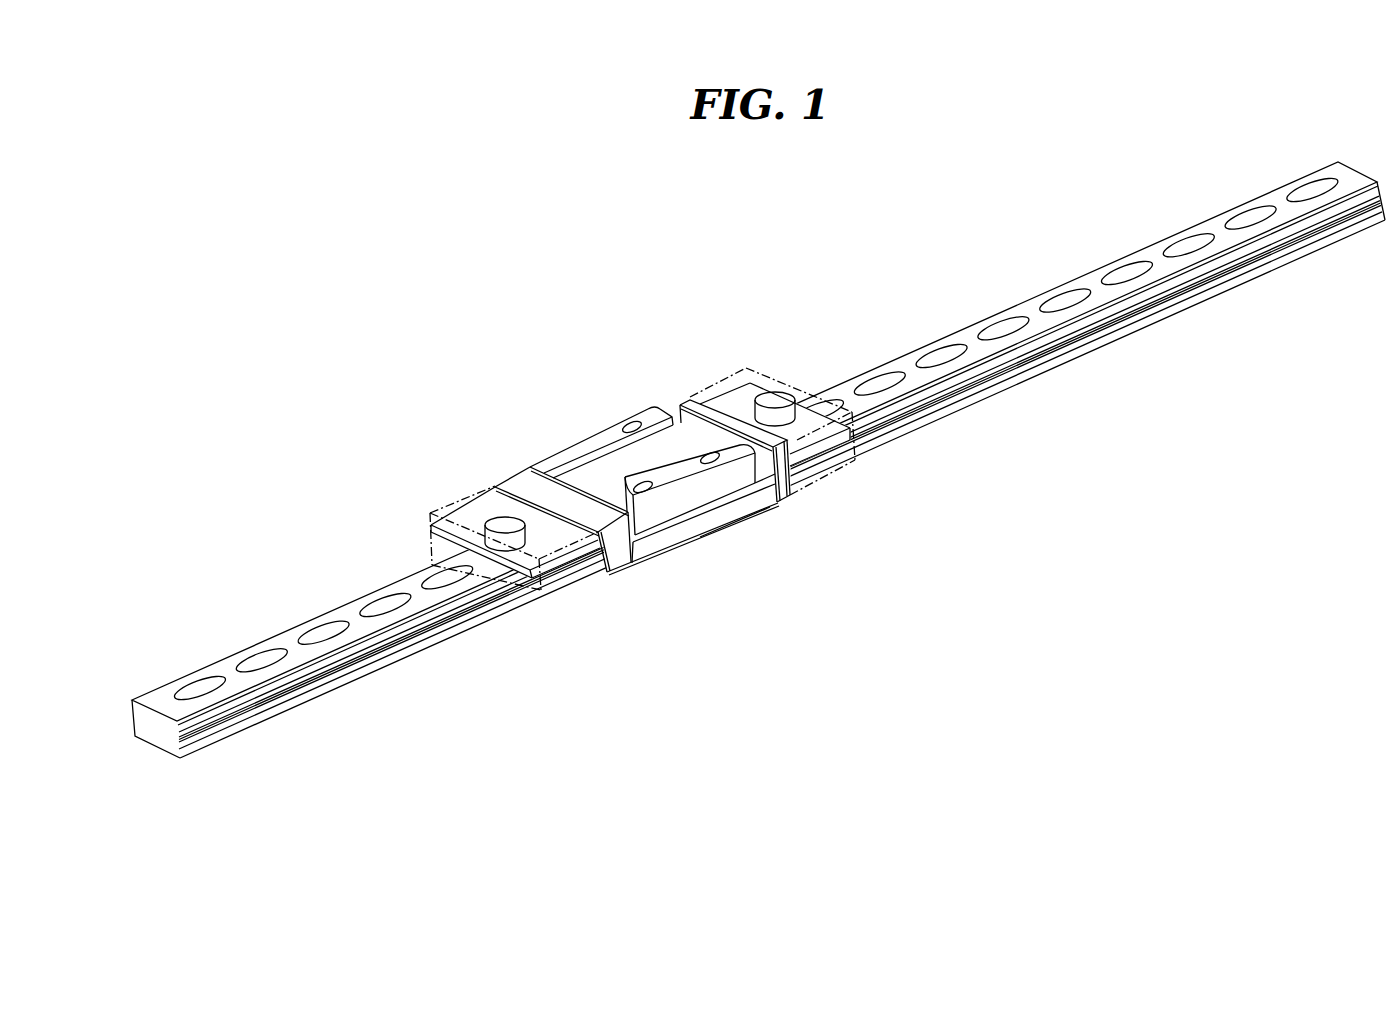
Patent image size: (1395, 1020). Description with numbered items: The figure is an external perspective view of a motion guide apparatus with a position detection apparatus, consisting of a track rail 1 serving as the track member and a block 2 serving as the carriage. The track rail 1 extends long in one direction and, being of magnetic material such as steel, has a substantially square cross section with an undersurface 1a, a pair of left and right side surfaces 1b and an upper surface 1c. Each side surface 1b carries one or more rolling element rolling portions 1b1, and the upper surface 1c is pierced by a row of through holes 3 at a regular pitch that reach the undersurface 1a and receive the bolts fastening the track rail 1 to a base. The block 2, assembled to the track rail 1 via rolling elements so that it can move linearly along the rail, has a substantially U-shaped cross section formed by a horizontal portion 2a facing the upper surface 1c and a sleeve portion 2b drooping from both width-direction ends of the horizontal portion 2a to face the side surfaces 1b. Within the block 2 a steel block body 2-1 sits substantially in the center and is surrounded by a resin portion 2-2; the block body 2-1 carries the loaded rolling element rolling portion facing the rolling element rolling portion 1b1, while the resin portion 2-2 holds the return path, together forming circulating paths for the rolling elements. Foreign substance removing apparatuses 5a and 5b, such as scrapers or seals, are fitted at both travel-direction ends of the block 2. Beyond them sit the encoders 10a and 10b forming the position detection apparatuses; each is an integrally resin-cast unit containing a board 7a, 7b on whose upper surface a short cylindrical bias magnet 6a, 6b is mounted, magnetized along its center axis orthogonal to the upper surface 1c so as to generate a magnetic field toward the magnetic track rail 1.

The track rail 1 is at (726, 490).
The undersurface 1a is at (155, 760).
The side surfaces 1b is at (131, 722).
The rolling element rolling portion 1b1 is at (325, 690).
The upper surface 1c is at (165, 688).
The block 2 is at (598, 404).
The horizontal portion 2a is at (660, 438).
The sleeve portion 2b is at (710, 523).
The block body 2-1 is at (632, 470).
The resin portion 2-2 is at (765, 510).
The through holes 3 is at (317, 621).
The foreign substance removing apparatus 5a is at (545, 489).
The foreign substance removing apparatus 5b is at (738, 388).
The bias magnet 6a is at (507, 548).
The bias magnet 6b is at (782, 407).
The board 7a is at (545, 545).
The board 7b is at (822, 440).
The encoder 10a is at (487, 497).
The encoder 10b is at (765, 378).